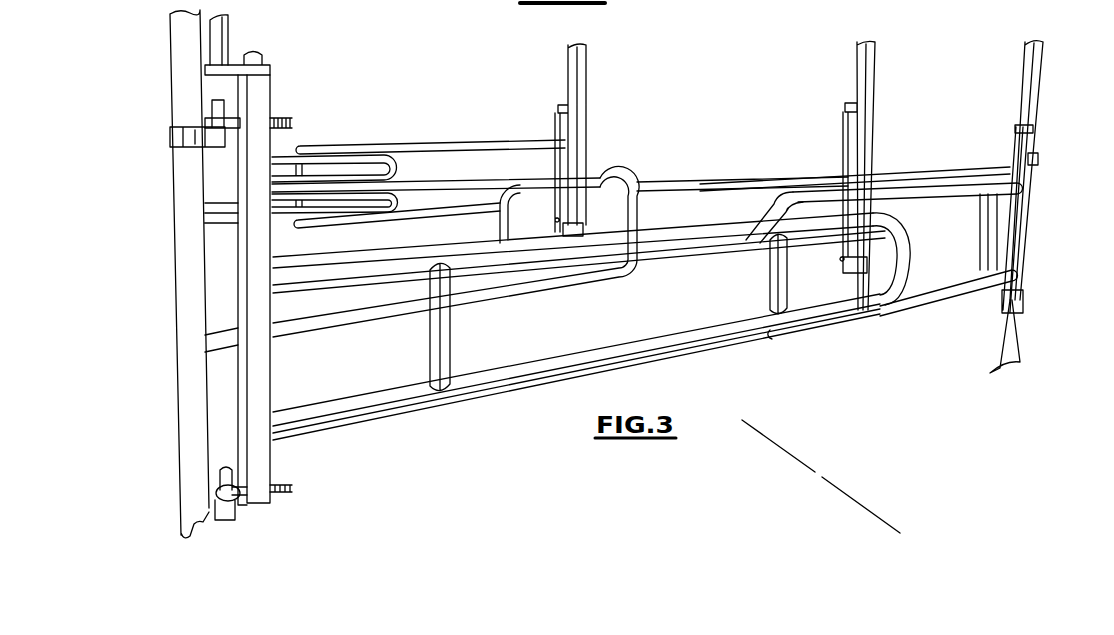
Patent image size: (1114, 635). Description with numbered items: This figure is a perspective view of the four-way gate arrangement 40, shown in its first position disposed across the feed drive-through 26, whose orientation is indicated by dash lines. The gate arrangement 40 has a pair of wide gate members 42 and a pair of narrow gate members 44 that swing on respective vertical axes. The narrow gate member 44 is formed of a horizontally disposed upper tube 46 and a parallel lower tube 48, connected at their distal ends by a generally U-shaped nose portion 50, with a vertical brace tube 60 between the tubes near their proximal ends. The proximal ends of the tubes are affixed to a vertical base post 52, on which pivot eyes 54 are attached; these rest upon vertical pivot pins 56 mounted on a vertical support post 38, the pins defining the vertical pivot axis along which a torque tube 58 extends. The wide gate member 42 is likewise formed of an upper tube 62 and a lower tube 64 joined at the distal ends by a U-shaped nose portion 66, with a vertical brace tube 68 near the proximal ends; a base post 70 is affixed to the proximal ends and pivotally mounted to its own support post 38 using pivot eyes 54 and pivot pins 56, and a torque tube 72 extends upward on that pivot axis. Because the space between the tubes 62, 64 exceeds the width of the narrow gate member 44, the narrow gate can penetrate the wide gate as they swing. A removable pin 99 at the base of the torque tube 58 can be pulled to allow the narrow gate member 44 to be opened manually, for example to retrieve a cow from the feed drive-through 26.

The feed drive-through 26 is at (805, 462).
The vertical support post 38 is at (170, 62).
The four-way gate arrangement 40 is at (725, 118).
The wide gate member 42 is at (440, 145).
The narrow gate member 44 is at (283, 157).
The upper tube 46 is at (400, 258).
The lower tube 48 is at (503, 400).
The U-shaped nose portion 50 is at (890, 305).
The vertical base post 52 is at (274, 462).
The pivot eye 54 is at (210, 117).
The vertical pivot pin 56 is at (205, 140).
The torque tube 58 is at (226, 30).
The vertical brace tube 60 is at (450, 338).
The upper tube 62 is at (887, 175).
The lower tube 64 is at (940, 297).
The U-shaped nose portion 66 is at (780, 210).
The vertical brace tube 68 is at (982, 240).
The base post 70 is at (1015, 225).
The torque tube 72 is at (1040, 68).
The removable pin 99 is at (262, 60).